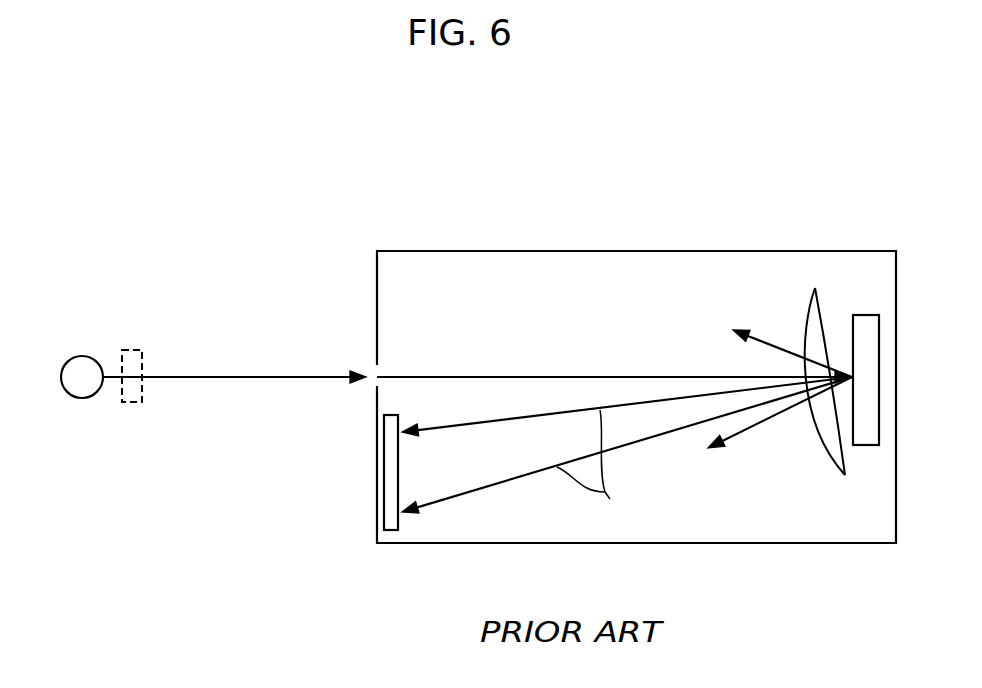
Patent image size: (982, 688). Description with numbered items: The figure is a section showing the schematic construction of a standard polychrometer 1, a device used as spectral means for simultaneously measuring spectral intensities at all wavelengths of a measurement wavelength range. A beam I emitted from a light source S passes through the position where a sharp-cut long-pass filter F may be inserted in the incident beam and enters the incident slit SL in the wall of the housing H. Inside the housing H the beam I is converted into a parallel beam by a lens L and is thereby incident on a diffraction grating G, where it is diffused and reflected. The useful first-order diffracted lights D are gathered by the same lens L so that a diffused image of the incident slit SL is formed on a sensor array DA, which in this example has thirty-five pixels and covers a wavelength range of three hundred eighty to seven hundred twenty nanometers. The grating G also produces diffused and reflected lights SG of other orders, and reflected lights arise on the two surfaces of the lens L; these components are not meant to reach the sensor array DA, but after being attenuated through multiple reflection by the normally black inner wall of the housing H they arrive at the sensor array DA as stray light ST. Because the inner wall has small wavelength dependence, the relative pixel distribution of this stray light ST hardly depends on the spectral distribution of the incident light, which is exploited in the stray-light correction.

The polychrometer 1 is at (300, 190).
The light source S is at (83, 355).
The filter F is at (133, 350).
The housing H is at (617, 251).
The incident slit SL is at (371, 370).
The beam I is at (518, 377).
The lens L is at (812, 381).
The diffraction grating G is at (866, 360).
The diffused/reflected lights SG is at (772, 346).
The stray light ST is at (422, 443).
The sensor array DA is at (410, 472).
The first-order diffracted lights D is at (593, 466).